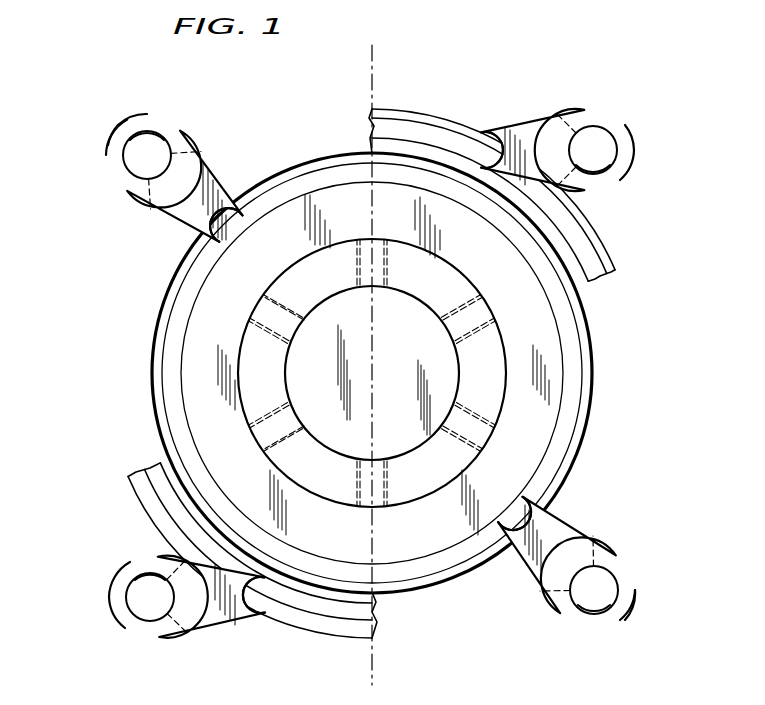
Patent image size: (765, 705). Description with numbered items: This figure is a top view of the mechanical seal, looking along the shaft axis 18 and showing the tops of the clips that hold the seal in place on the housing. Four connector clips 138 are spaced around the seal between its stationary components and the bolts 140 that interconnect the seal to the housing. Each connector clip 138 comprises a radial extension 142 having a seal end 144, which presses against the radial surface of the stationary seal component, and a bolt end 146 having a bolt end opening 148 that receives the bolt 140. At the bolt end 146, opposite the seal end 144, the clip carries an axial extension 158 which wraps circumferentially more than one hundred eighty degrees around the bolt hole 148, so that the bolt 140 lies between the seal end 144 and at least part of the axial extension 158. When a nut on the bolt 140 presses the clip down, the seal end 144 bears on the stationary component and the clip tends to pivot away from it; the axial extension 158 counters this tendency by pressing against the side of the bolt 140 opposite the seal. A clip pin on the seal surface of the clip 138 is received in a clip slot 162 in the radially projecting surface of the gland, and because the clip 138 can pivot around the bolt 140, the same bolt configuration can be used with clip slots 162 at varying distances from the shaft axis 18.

The shaft axis 18 is at (372, 97).
The connector clip 138 is at (630, 605).
The bolt 140 is at (610, 582).
The radial extension 142 is at (582, 543).
The seal end 144 is at (508, 497).
The bolt end 146 is at (618, 628).
The bolt end opening 148 is at (600, 615).
The axial extension 158 is at (110, 130).
The clip slot 162 is at (592, 385).